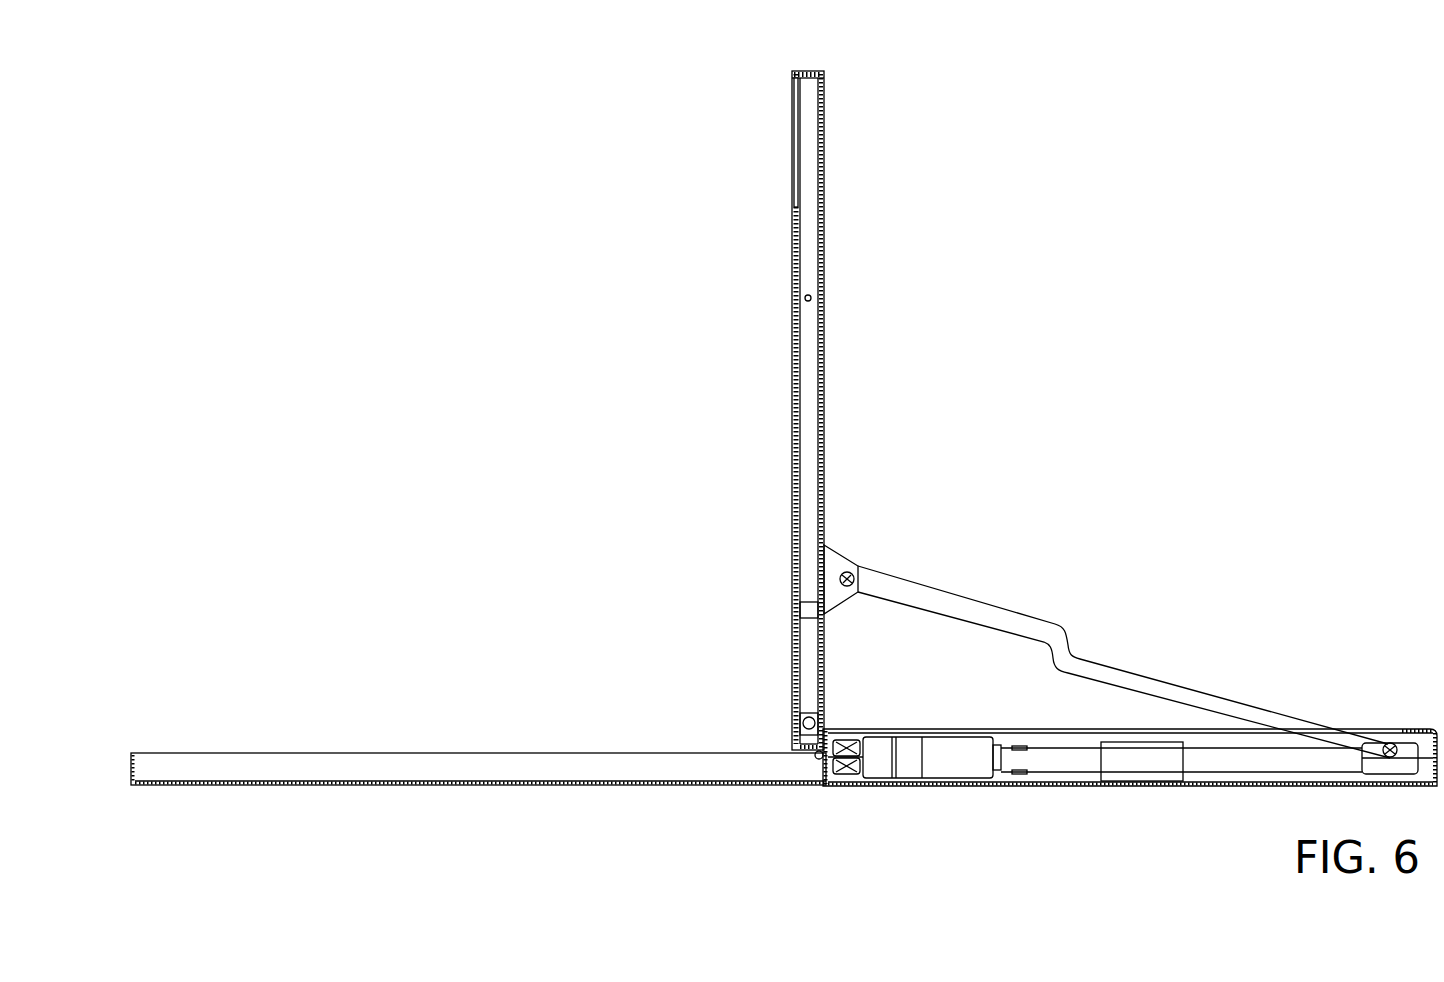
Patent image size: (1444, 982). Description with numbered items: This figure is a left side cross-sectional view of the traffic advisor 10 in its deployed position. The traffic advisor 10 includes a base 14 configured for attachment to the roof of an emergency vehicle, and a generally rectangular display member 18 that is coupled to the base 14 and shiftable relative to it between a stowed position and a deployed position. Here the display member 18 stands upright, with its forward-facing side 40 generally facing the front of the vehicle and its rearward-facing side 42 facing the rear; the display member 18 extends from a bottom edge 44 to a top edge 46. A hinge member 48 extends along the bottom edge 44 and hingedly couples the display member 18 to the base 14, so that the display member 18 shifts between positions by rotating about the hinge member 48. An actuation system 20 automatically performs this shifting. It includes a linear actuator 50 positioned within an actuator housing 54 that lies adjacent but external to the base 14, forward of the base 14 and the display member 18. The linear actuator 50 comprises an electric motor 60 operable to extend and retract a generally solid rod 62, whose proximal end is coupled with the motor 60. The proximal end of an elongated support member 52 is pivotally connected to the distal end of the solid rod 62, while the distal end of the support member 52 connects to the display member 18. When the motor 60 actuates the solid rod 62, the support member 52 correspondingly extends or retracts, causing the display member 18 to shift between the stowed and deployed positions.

The traffic advisor 10 is at (368, 430).
The base 14 is at (488, 782).
The display member 18 is at (806, 395).
The actuation system 20 is at (1246, 588).
The forward-facing side 40 is at (825, 143).
The rearward-facing side 42 is at (798, 155).
The bottom edge 44 is at (802, 753).
The top edge 46 is at (803, 70).
The hinge member 48 is at (817, 759).
The linear actuator 50 is at (937, 694).
The elongated support member 52 is at (1120, 678).
The actuator housing 54 is at (1423, 730).
The electric motor 60 is at (912, 763).
The solid rod 62 is at (1252, 762).